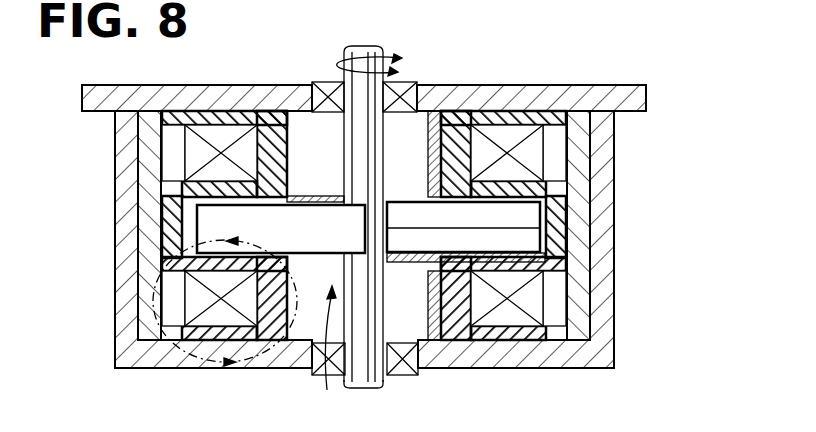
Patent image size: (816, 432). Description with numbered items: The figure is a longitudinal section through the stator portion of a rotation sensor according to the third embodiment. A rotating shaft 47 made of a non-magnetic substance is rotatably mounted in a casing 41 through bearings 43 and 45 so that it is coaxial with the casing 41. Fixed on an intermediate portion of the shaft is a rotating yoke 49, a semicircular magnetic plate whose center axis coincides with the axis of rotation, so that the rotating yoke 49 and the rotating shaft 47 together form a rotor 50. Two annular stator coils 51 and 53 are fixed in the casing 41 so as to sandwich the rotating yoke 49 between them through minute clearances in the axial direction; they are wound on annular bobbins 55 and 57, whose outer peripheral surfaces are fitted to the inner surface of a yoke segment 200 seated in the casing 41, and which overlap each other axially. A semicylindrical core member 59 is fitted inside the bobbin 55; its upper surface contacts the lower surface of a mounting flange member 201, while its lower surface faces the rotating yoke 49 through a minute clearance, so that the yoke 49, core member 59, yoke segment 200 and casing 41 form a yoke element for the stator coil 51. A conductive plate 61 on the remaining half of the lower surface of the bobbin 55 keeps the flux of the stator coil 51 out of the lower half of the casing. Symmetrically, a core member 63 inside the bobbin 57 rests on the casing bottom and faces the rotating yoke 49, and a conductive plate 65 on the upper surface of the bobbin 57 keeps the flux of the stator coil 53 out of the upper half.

The casing 41 is at (607, 345).
The bearing 43 is at (408, 83).
The bearing 45 is at (408, 376).
The rotating shaft 47 is at (372, 51).
The rotating yoke 49 is at (203, 214).
The rotor 50 is at (342, 420).
The stator coil 51 is at (527, 155).
The stator coil 53 is at (537, 298).
The annular bobbin 55 is at (273, 90).
The annular bobbin 57 is at (468, 342).
The semicylindrical core member 59 is at (428, 173).
The conductive plate 61 is at (313, 197).
The semicylindrical core member 63 is at (305, 333).
The conductive plate 65 is at (420, 262).
The yoke segment 200 is at (583, 201).
The mounting flange member 201 is at (647, 92).